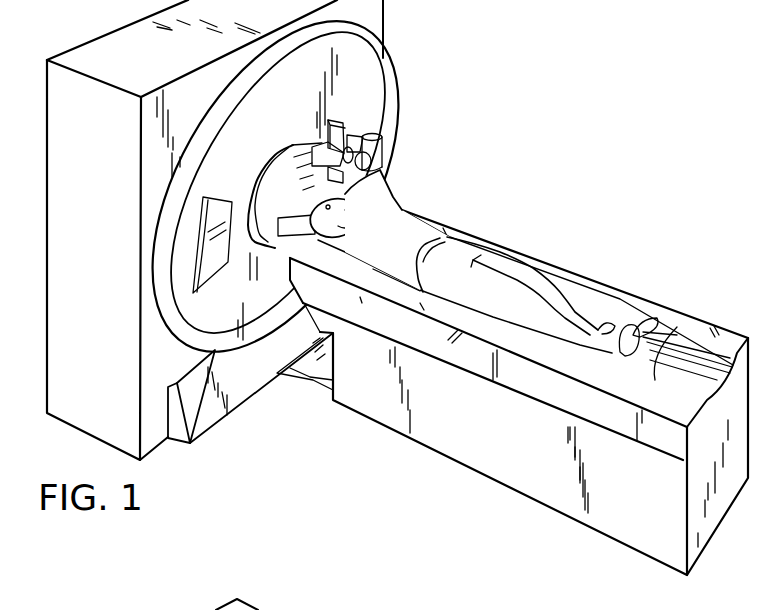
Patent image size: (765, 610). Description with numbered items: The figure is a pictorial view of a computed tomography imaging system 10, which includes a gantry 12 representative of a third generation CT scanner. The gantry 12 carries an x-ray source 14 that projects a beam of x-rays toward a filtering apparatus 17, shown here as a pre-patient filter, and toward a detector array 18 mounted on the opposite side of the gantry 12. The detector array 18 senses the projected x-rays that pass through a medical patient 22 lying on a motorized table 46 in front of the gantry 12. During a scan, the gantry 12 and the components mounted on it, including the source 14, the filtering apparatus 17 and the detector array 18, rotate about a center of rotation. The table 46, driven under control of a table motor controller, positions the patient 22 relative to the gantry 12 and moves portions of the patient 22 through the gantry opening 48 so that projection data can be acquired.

The CT imaging system 10 is at (494, 94).
The gantry 12 is at (371, 99).
The x-ray source 14 is at (384, 152).
The filtering apparatus 17 is at (364, 119).
The detector array 18 is at (203, 276).
The medical patient 22 is at (421, 231).
The motorized table 46 is at (503, 467).
The gantry opening 48 is at (269, 182).